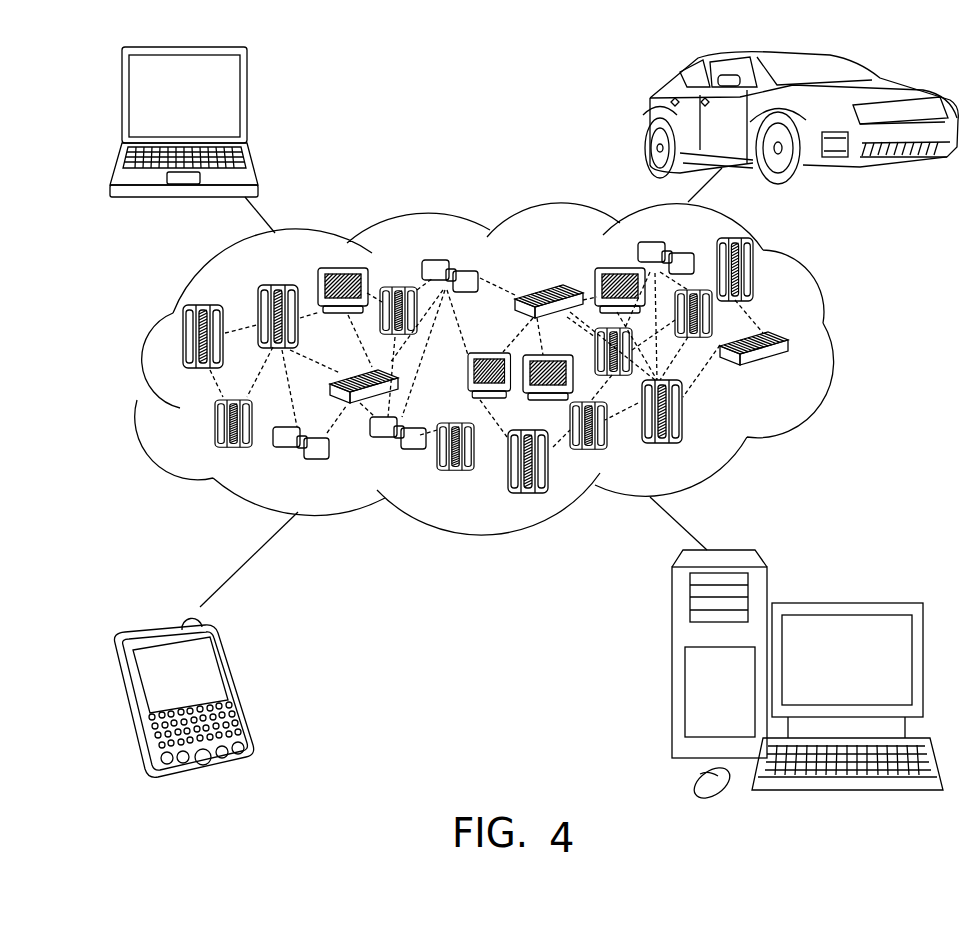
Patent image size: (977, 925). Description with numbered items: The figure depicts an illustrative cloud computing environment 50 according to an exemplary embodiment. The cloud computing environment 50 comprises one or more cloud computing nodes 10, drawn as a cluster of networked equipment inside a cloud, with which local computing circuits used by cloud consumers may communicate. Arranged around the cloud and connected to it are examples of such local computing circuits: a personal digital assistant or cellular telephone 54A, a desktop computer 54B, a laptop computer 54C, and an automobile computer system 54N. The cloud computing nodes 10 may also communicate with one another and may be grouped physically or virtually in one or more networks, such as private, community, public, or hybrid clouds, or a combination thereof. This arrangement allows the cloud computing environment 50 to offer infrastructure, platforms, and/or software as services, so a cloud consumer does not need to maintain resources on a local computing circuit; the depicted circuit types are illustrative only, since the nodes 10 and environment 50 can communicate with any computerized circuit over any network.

The cloud computing environment 50 is at (841, 343).
The cloud computing node 10 is at (793, 372).
The personal digital assistant (PDA) or cellular telephone 54A is at (240, 687).
The desktop computer 54B is at (842, 602).
The laptop computer 54C is at (247, 102).
The automobile computer system 54N is at (645, 118).